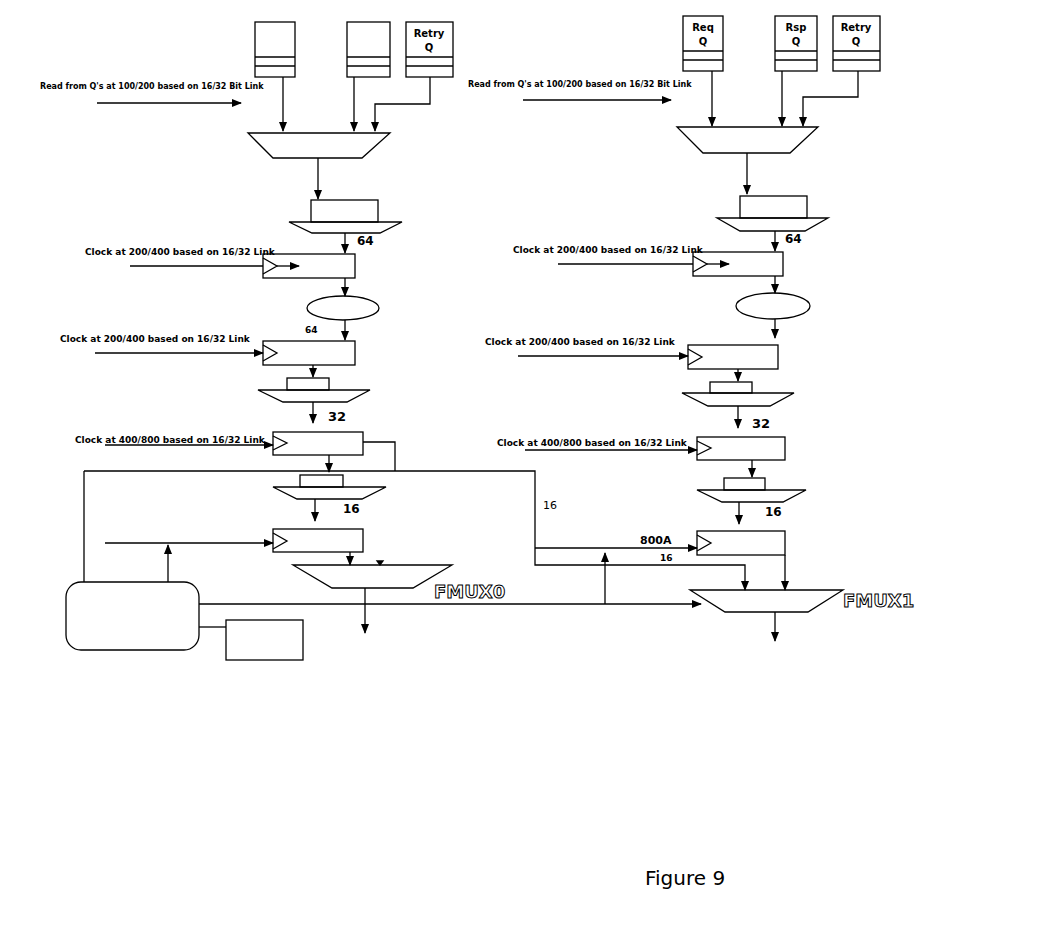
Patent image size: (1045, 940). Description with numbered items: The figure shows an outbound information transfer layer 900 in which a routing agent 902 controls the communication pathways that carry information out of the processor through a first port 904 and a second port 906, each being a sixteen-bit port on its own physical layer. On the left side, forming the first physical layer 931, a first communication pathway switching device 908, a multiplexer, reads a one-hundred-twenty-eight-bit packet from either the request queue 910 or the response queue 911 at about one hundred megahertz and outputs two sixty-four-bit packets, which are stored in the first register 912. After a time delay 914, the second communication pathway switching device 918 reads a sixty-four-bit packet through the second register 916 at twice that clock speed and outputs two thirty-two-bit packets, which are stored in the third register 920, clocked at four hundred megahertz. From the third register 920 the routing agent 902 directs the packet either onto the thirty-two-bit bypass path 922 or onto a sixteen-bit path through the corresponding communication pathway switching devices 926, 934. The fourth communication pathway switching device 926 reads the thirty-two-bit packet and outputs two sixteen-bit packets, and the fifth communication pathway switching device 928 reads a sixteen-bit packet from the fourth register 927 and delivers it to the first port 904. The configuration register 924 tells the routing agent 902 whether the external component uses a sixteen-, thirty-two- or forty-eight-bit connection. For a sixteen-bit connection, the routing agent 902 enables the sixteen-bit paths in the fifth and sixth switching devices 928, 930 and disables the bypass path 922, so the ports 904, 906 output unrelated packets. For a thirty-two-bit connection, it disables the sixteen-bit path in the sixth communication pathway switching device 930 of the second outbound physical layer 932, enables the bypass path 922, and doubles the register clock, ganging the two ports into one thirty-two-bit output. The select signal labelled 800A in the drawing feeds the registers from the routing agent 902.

The outbound information transfer layer 900 is at (572, 806).
The routing agent 902 is at (383, 616).
The first port 904 is at (384, 622).
The second port 906 is at (766, 637).
The first communication pathway switching device 908 is at (345, 216).
The request queue 910 is at (275, 39).
The response queue 911 is at (368, 39).
The first register 912 is at (309, 266).
The time delay 914 is at (343, 308).
The second register 916 is at (309, 353).
The second communication pathway switching device 918 is at (314, 390).
The third register 920 is at (318, 443).
The 32-bit bypass path 922 is at (429, 466).
The configuration register 924 is at (264, 640).
The fourth communication pathway switching device 926 is at (329, 487).
The fourth register 927 is at (318, 540).
The fifth communication pathway switching device 928 is at (372, 576).
The sixth communication pathway switching device 930 is at (766, 601).
The first physical layer 931 is at (357, 739).
The second outbound physical layer 932 is at (786, 733).
The communication pathway switching device 934 is at (751, 490).
The routing agent select signal 800A is at (189, 536).